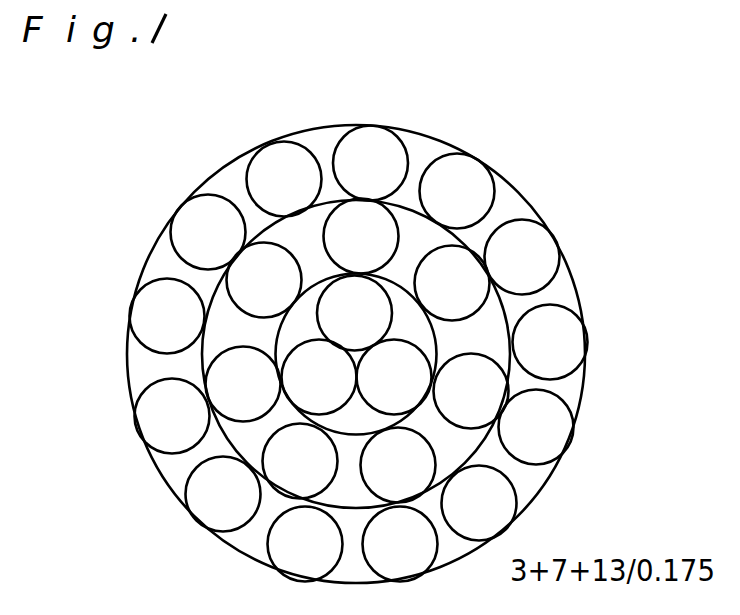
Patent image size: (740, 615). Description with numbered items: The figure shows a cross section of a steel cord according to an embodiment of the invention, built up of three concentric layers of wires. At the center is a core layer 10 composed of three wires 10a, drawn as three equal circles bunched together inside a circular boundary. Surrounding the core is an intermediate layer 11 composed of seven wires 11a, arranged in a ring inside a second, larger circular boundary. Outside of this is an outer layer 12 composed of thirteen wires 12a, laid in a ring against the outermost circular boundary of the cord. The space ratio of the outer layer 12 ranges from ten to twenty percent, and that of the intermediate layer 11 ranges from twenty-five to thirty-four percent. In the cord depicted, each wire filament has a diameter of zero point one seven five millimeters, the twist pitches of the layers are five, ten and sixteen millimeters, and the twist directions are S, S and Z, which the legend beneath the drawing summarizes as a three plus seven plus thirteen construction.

The core layer 10 is at (423, 340).
The wire 10a is at (312, 379).
The intermediate layer 11 is at (469, 441).
The wire 11a is at (447, 282).
The outer layer 12 is at (565, 394).
The wire 12a is at (553, 352).